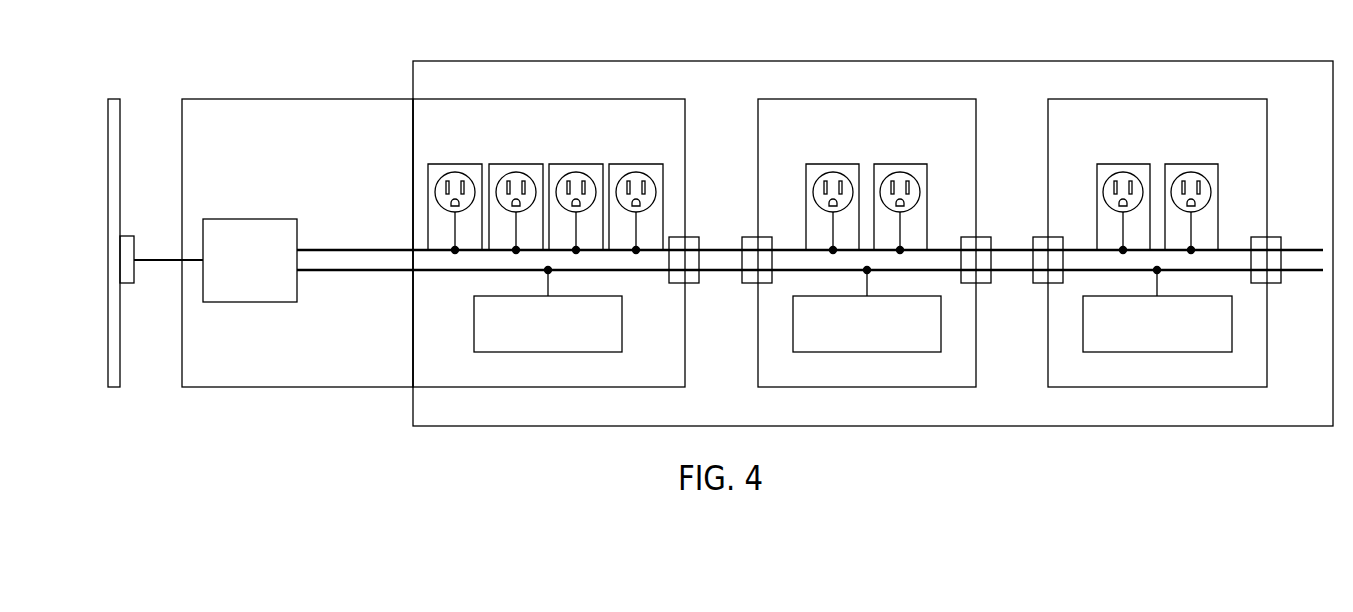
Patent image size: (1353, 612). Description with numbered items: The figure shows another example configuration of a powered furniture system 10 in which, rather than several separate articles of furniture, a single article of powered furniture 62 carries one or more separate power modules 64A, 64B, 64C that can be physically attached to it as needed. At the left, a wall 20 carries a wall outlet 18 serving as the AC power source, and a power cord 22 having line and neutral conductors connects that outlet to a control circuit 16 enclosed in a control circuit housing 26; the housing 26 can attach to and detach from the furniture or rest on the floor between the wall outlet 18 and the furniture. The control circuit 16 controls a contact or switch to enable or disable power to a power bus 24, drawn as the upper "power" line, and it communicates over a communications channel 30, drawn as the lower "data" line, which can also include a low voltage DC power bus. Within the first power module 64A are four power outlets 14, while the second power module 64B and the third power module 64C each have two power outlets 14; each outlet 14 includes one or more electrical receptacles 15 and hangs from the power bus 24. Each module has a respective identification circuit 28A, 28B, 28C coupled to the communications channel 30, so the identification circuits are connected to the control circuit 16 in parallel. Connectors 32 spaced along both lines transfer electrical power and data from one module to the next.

The powered furniture system 10 is at (190, 36).
The power outlet 14 is at (580, 164).
The electrical receptacle 15 is at (573, 172).
The control circuit 16 is at (250, 219).
The wall outlet 18 is at (128, 283).
The wall 20 is at (108, 242).
The power cord 22 is at (158, 258).
The power bus 24 is at (388, 247).
The control circuit housing 26 is at (300, 99).
The identification circuit 28A is at (553, 352).
The identification circuit 28B is at (871, 352).
The identification circuit 28C is at (1161, 352).
The communications channel 30 is at (388, 277).
The connector 32 is at (750, 237).
The article of powered furniture 62 is at (873, 61).
The first power module 64A is at (548, 99).
The second power module 64B is at (866, 99).
The third power module 64C is at (1160, 99).